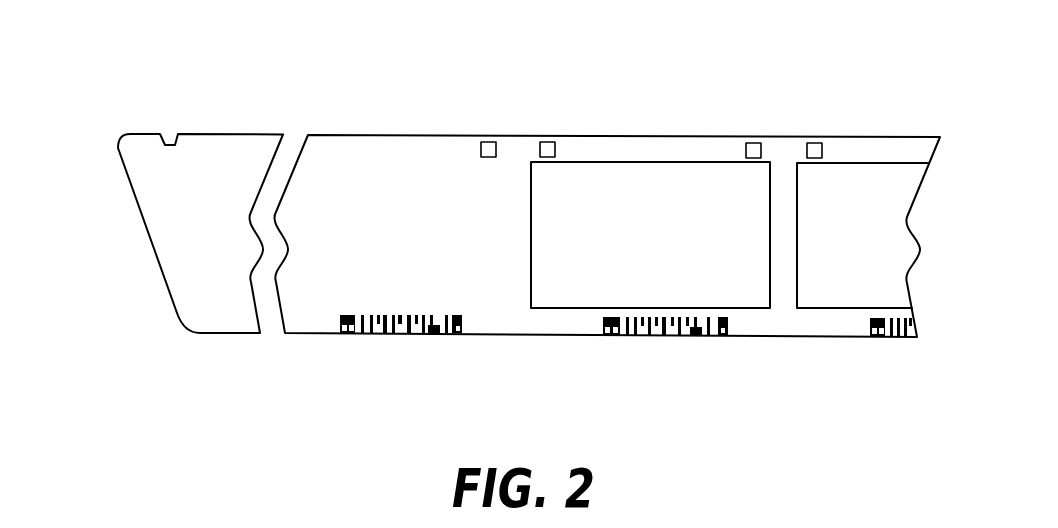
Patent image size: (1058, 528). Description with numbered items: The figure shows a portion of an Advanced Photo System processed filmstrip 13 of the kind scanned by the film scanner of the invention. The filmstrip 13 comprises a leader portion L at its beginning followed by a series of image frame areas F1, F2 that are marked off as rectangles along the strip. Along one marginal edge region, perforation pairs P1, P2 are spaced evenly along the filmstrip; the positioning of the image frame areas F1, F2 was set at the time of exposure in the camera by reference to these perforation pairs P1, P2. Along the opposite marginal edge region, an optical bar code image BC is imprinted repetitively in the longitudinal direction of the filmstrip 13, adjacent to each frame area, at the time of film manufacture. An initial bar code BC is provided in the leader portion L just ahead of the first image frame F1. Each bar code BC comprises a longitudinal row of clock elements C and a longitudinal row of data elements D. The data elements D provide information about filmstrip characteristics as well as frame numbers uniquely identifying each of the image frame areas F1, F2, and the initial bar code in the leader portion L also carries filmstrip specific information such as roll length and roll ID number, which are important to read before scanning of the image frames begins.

The processed filmstrip 13 is at (655, 130).
The leader portion L is at (492, 115).
The perforation pair P1 is at (490, 142).
The perforation pair P2 is at (549, 142).
The first image frame area F1 is at (658, 252).
The second image frame area F2 is at (877, 253).
The optical bar code image BC is at (455, 353).
The clock elements C is at (464, 322).
The data elements D is at (464, 328).